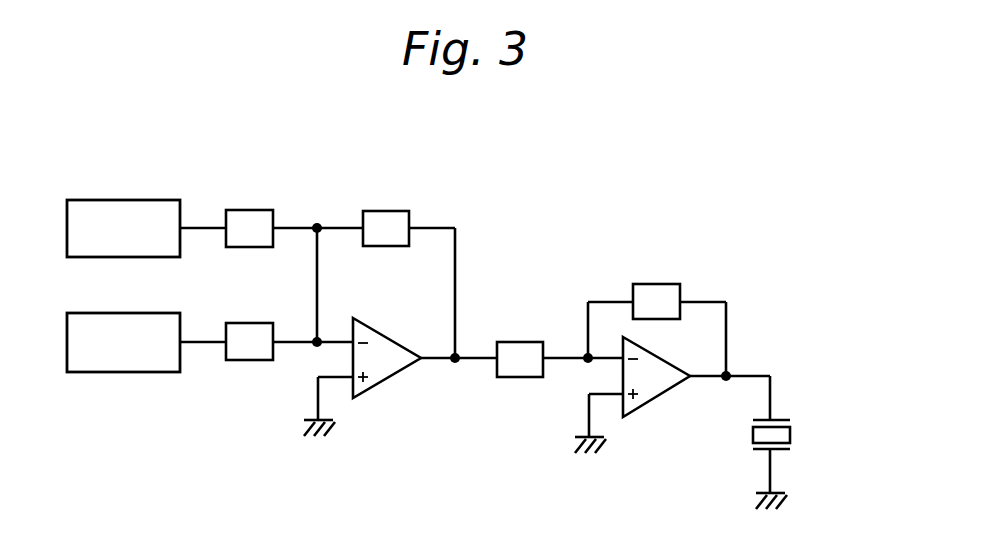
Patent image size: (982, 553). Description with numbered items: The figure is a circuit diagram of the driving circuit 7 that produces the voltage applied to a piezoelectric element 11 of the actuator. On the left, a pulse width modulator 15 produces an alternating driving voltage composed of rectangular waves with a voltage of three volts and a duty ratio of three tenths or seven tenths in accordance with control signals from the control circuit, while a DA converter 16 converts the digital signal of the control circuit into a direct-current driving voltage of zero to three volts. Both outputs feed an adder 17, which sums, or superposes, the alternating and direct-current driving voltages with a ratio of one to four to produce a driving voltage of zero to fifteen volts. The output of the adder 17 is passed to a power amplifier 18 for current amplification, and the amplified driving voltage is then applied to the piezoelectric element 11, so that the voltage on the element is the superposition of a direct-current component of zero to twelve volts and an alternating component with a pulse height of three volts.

The driving circuit 7 is at (478, 208).
The piezoelectric element 11 is at (791, 433).
The pulse width modulator 15 is at (125, 200).
The DA converter 16 is at (125, 372).
The adder 17 is at (388, 382).
The power amplifier 18 is at (660, 398).